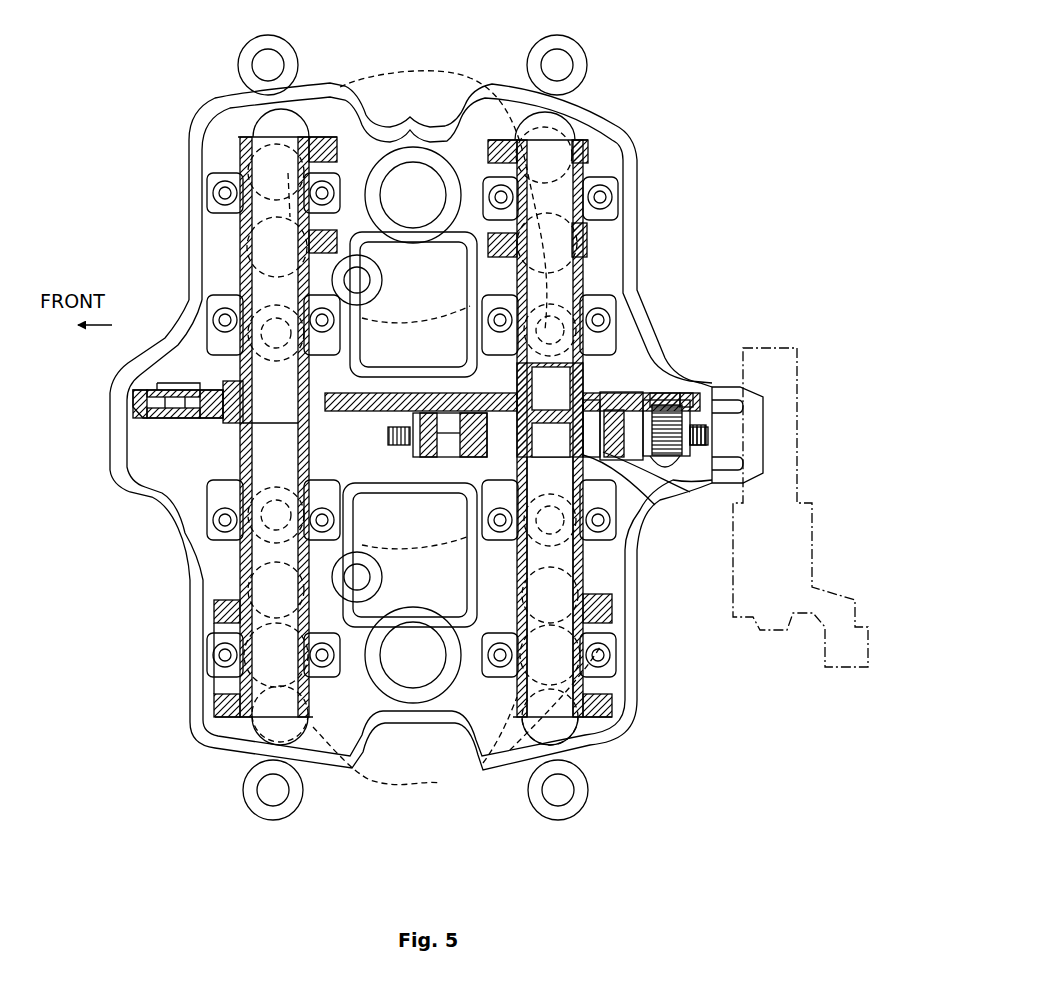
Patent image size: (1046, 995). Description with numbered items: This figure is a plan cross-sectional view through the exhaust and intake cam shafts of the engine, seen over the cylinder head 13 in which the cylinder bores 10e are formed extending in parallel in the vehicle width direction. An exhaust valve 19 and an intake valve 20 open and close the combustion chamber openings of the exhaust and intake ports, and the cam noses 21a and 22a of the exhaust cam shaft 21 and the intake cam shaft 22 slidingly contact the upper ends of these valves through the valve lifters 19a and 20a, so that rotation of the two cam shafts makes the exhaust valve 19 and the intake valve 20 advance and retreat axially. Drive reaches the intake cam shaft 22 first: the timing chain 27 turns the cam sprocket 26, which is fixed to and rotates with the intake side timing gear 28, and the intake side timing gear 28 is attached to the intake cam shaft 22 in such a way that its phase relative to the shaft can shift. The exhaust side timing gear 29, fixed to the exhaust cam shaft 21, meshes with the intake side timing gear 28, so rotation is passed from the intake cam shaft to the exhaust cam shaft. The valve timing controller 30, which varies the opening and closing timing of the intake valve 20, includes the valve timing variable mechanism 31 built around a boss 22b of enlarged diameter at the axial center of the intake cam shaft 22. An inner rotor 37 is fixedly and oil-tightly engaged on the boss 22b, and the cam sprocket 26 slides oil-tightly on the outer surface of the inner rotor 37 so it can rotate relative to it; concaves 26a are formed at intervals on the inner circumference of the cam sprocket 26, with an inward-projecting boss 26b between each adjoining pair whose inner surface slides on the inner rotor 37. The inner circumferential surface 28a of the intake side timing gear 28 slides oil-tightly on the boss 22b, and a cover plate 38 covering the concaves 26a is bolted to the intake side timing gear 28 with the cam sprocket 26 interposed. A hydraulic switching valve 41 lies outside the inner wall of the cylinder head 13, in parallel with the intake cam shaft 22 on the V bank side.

The cylinder bore 10e is at (412, 76).
The front cylinder head 13 is at (180, 270).
The exhaust valve 19 is at (245, 134).
The valve lifter 19a is at (249, 133).
The intake valve 20 is at (556, 210).
The valve lifter 20a is at (578, 126).
The exhaust cam shaft 21 is at (236, 581).
The cam nose 21a is at (322, 138).
The intake cam shaft 22 is at (594, 576).
The cam nose 22a is at (612, 616).
The boss 22b is at (607, 457).
The cam sprocket 26 is at (690, 421).
The concave 26a is at (450, 458).
The boss 26b is at (706, 436).
The timing chain 27 is at (706, 444).
The intake side timing gear 28 is at (745, 390).
The inner circumferential surface 28a is at (692, 392).
The exhaust side timing gear 29 is at (138, 418).
The valve timing controller 30 is at (744, 286).
The valve timing variable mechanism 31 is at (488, 488).
The inner rotor 37 is at (622, 456).
The cover plate 38 is at (417, 458).
The hydraulic switching valve 41 is at (804, 382).